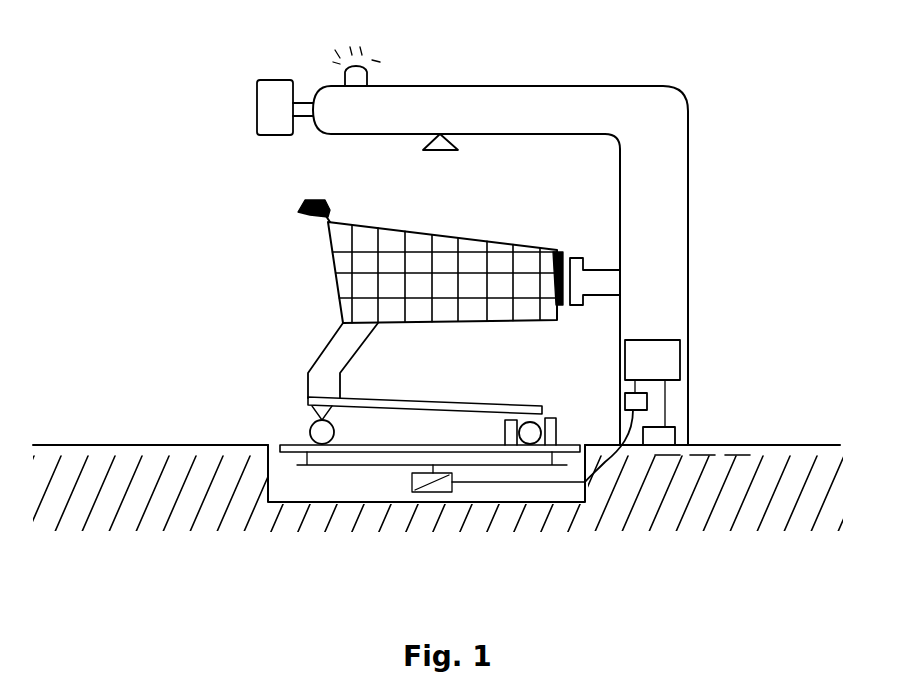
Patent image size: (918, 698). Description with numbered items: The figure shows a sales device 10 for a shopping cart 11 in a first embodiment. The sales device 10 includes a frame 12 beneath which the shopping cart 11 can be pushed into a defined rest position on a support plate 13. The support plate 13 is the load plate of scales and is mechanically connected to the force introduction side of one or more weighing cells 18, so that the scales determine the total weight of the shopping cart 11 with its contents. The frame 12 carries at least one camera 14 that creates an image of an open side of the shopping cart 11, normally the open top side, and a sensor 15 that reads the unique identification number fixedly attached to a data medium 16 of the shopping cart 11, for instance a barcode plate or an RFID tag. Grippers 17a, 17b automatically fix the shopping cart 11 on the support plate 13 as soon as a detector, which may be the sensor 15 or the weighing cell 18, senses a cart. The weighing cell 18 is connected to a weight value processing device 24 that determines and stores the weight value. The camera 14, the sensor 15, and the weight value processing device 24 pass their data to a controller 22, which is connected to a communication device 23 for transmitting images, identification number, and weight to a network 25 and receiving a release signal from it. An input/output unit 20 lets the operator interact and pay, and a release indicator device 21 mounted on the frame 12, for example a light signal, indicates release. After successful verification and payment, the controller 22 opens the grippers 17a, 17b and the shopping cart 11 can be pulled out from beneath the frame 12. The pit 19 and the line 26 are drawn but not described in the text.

The sales device 10 is at (145, 128).
The shopping cart 11 is at (325, 259).
The frame 12 is at (530, 86).
The support plate 13 is at (283, 440).
The camera 14 is at (458, 150).
The sensor 15 is at (598, 268).
The data medium 16 is at (548, 323).
The gripper 17a is at (556, 430).
The gripper 17b is at (505, 424).
The weighing cell 18 is at (449, 492).
The pit 19 is at (345, 490).
The input/output unit 20 is at (258, 78).
The release indicator device 21 is at (368, 62).
The controller 22 is at (680, 358).
The communication device 23 is at (675, 435).
The weight value processing device 24 is at (622, 400).
The network 25 is at (745, 448).
The cable 26 is at (570, 482).